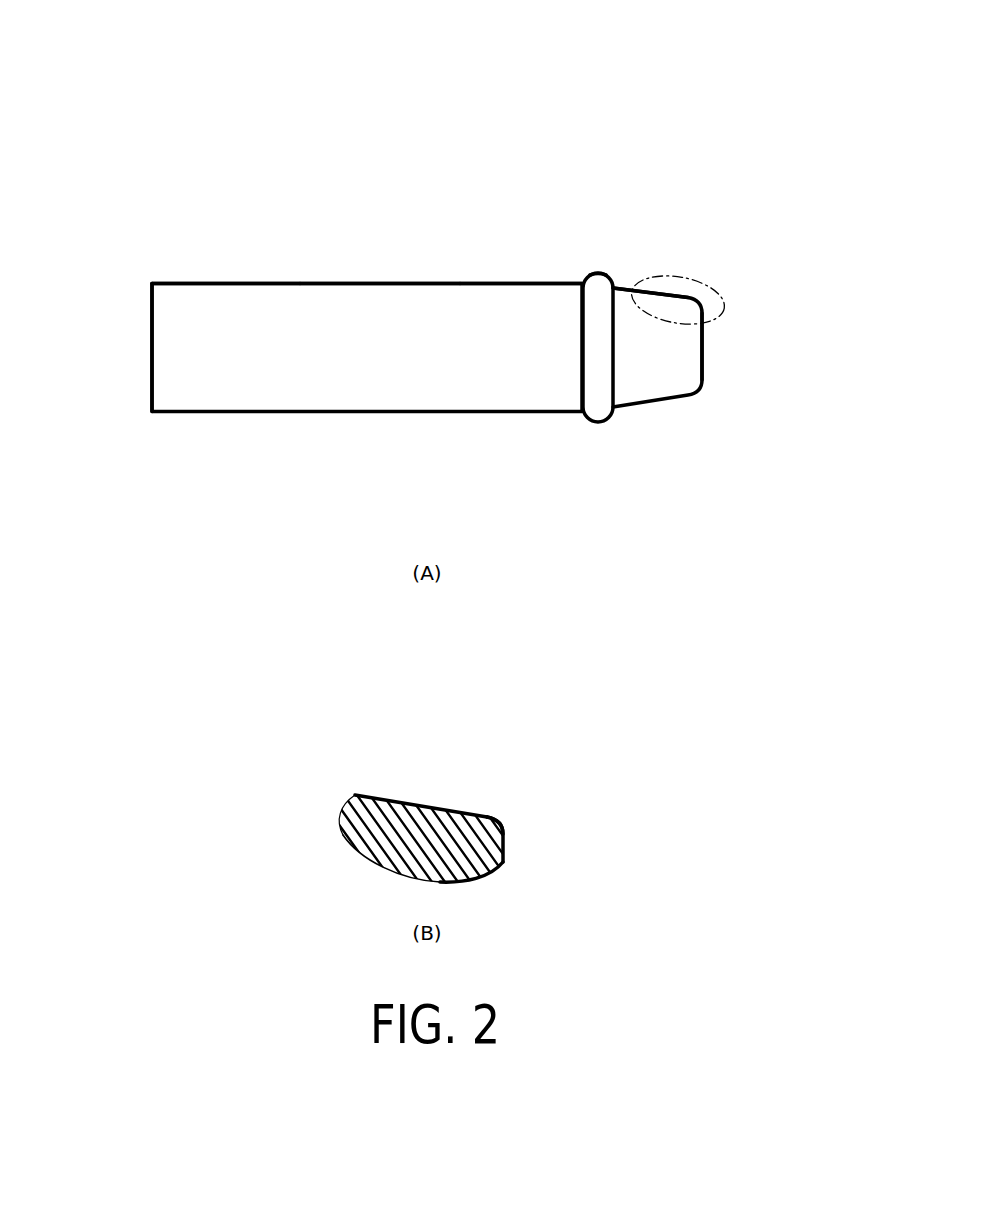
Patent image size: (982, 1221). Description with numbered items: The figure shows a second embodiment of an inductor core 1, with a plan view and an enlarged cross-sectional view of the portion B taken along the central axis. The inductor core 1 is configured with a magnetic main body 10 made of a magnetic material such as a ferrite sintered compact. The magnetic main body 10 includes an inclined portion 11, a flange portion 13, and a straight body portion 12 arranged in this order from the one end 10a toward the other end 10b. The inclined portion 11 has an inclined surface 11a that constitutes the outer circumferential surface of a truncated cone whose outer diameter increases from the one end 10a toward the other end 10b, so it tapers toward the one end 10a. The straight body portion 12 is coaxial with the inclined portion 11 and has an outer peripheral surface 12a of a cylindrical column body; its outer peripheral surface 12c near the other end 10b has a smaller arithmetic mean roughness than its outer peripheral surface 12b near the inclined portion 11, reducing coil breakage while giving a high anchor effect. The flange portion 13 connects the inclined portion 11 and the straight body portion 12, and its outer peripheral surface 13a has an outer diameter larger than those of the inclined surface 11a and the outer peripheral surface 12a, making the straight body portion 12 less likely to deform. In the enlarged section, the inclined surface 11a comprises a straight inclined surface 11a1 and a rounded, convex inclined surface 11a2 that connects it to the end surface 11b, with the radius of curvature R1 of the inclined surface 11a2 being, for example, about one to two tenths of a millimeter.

The inductor core 1 is at (433, 277).
The magnetic main body 10 is at (433, 357).
The one end 10a is at (703, 345).
The other end 10b is at (151, 343).
The inclined portion 11 is at (657, 372).
The inclined surface 11a is at (622, 287).
The inclined surface 11a1 is at (422, 807).
The inclined surface 11a2 is at (504, 834).
The end surface 11b is at (435, 821).
The straight body portion 12 is at (392, 377).
The outer peripheral surface 12a is at (376, 283).
The outer peripheral surface 12b is at (508, 283).
The outer peripheral surface 12c is at (175, 283).
The flange portion 13 is at (598, 375).
The outer peripheral surface 13a is at (597, 274).
The portion B is at (688, 277).
The radius of curvature R1 is at (493, 823).